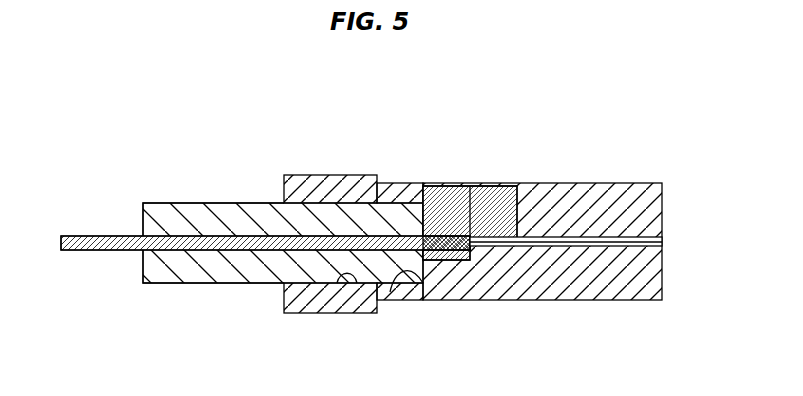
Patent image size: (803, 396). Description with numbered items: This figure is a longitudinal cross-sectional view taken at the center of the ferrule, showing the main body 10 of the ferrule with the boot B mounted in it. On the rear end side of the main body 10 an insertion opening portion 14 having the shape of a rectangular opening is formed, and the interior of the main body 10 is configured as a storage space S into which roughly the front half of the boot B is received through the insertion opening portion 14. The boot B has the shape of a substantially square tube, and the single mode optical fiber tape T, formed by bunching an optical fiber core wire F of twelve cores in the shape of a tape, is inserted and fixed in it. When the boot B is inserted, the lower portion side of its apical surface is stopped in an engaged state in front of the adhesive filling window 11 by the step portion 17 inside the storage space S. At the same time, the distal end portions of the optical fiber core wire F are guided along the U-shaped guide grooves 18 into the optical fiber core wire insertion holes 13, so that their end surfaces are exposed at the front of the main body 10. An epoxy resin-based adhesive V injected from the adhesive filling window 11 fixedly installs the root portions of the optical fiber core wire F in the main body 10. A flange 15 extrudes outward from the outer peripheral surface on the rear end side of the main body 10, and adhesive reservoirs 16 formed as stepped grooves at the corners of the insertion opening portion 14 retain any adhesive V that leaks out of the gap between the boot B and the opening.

The main body of the ferrule 10 is at (386, 218).
The adhesive filling window 11 is at (386, 238).
The optical fiber core wire insertion holes 13 is at (608, 187).
The insertion opening portion 14 is at (300, 222).
The flange 15 is at (364, 178).
The adhesive reservoirs 16 is at (290, 178).
The step portion 17 is at (391, 284).
The U-shaped guide grooves 18 is at (472, 242).
The boot B is at (203, 222).
The optical fiber core wire F is at (663, 213).
The storage space S is at (348, 276).
The single mode optical fiber tape T is at (103, 252).
The adhesive V is at (477, 184).